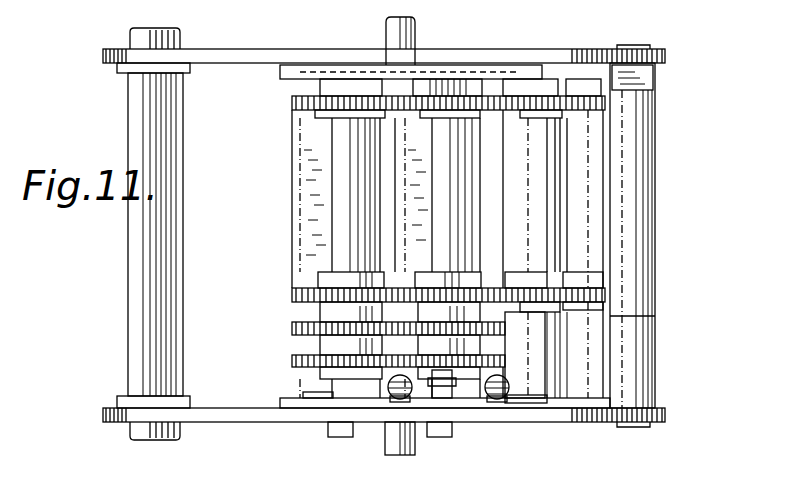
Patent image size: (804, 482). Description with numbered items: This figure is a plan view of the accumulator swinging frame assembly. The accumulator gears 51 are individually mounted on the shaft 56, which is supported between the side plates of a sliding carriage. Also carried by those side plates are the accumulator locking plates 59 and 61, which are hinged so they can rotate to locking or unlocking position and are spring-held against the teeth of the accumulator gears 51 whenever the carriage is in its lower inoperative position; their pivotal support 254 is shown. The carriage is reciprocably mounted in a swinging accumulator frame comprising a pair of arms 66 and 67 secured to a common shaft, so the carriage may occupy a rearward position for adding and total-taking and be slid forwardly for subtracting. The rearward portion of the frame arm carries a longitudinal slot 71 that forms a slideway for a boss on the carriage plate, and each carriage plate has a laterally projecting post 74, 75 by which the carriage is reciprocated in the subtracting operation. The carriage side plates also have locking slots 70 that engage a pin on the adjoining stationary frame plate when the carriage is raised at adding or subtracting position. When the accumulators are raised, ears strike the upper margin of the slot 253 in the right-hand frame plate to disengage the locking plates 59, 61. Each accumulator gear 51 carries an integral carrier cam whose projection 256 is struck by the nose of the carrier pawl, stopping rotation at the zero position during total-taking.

The accumulator gears 51 is at (292, 356).
The shaft 56 is at (335, 212).
The accumulator locking plate 59 is at (376, 134).
The accumulator locking plate 61 is at (474, 197).
The swinging frame arm 66 is at (228, 416).
The swinging frame arm 67 is at (243, 56).
The locking slots 70 is at (335, 70).
The longitudinal slot 71 is at (292, 410).
The laterally projecting post 74 is at (417, 30).
The laterally projecting post 75 is at (392, 446).
The slot 253 is at (340, 432).
The pivotal support 254 is at (303, 396).
The cam projection 256 is at (362, 278).